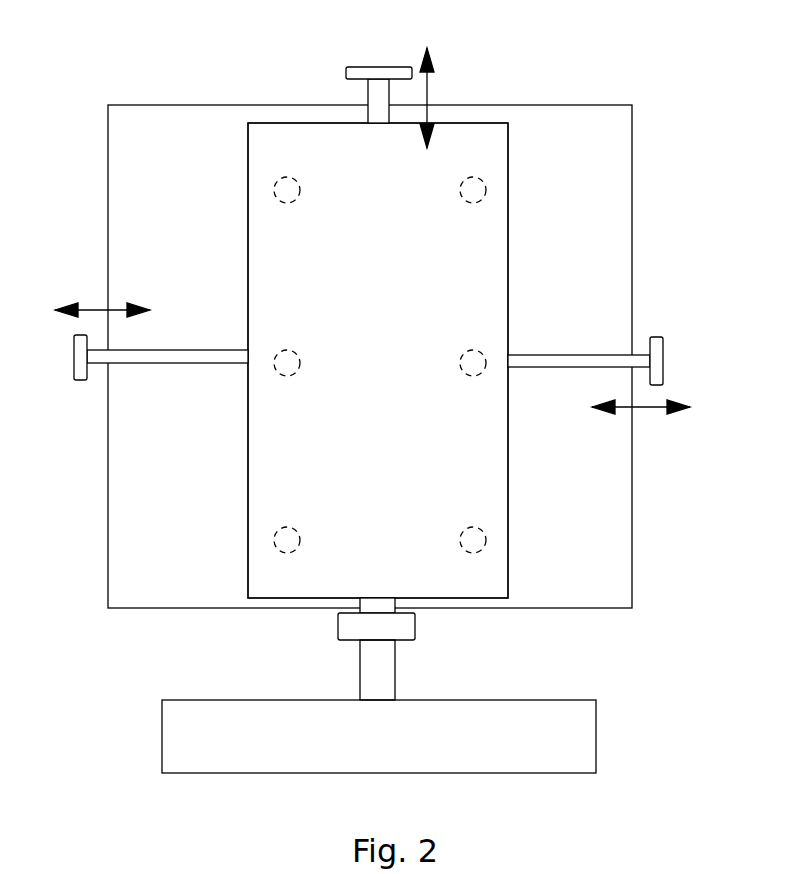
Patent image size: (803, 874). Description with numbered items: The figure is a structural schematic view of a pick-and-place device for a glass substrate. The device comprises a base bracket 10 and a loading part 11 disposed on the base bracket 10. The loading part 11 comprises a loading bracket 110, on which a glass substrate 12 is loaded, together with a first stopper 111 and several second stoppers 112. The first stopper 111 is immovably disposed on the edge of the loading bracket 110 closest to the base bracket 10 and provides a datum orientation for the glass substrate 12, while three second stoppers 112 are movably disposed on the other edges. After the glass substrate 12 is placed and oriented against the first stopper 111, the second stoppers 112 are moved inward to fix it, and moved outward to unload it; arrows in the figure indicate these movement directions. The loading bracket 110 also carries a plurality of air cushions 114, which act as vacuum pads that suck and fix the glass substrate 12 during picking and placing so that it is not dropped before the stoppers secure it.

The base bracket 10 is at (575, 713).
The loading part 11 is at (473, 129).
The glass substrate 12 is at (582, 132).
The loading bracket 110 is at (473, 311).
The first stopper 111 is at (393, 627).
The second stopper 112 is at (375, 73).
The air cushion 114 is at (272, 542).